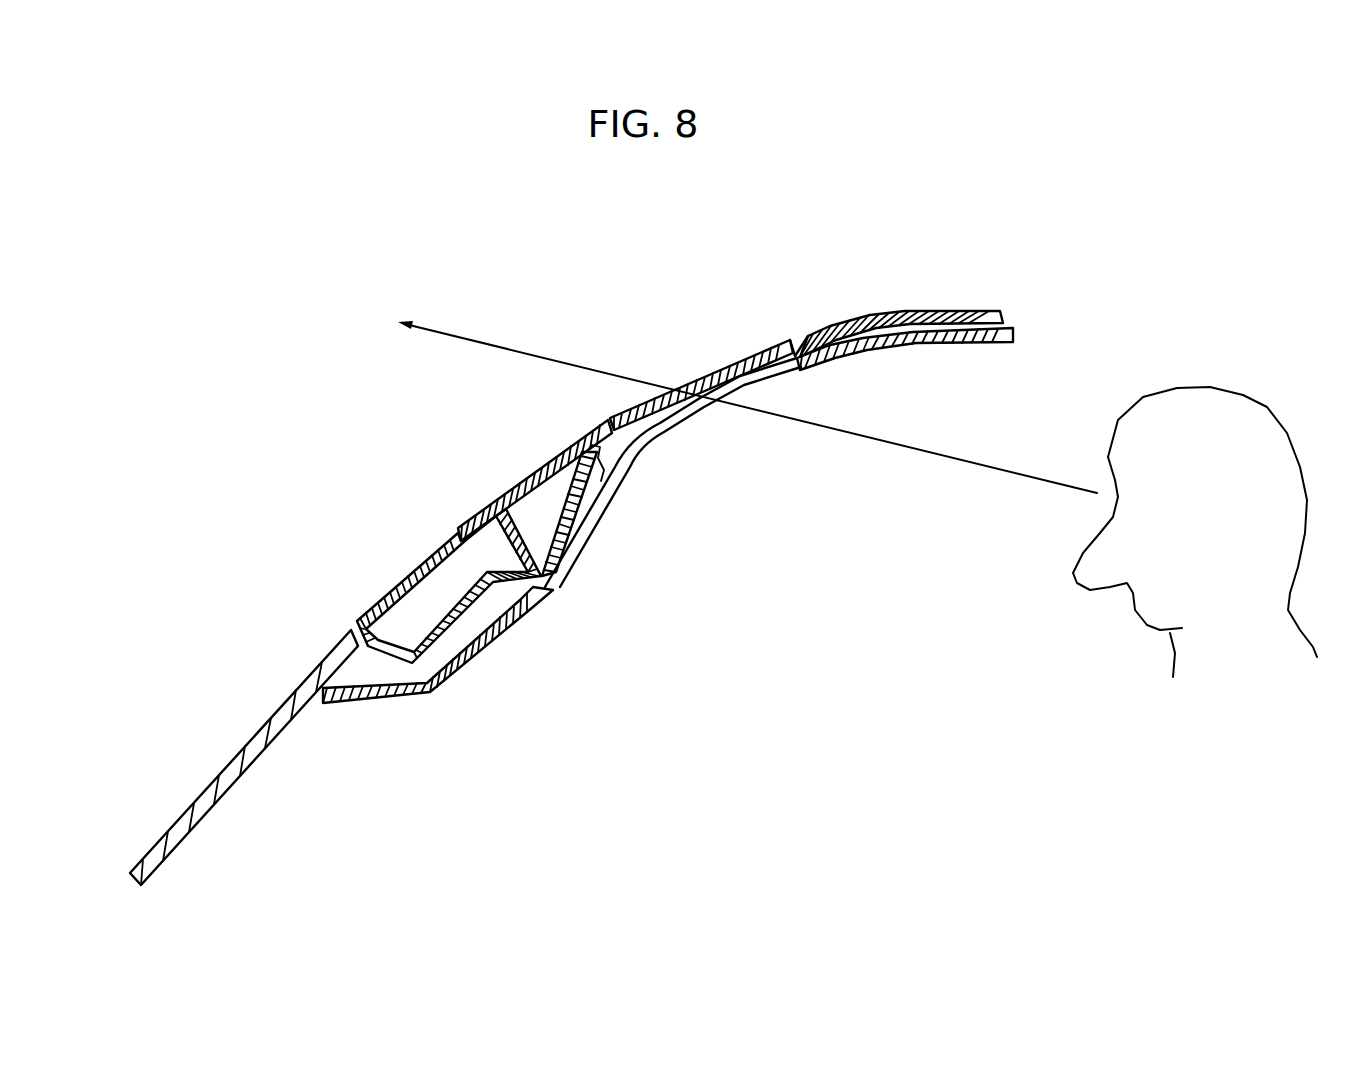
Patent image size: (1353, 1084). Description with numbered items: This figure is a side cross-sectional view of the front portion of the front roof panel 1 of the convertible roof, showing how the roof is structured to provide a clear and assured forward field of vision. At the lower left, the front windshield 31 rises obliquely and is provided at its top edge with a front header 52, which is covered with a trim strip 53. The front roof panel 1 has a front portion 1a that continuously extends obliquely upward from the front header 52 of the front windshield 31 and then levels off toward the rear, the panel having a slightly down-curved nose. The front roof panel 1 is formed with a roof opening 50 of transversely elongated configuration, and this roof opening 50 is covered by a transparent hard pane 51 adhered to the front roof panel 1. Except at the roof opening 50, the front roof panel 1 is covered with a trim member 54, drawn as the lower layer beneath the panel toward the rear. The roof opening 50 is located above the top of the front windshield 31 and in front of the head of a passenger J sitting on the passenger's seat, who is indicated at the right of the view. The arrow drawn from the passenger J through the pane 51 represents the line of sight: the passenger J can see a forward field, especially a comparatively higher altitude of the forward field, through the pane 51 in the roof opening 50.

The front roof panel 1 is at (930, 311).
The front portion 1a is at (490, 505).
The front windshield 31 is at (219, 775).
The roof opening 50 is at (673, 422).
The transparent hard pane 51 is at (746, 352).
The front header 52 is at (400, 582).
The trim strip 53 is at (437, 693).
The trim member 54 is at (937, 343).
The passenger J is at (1268, 407).